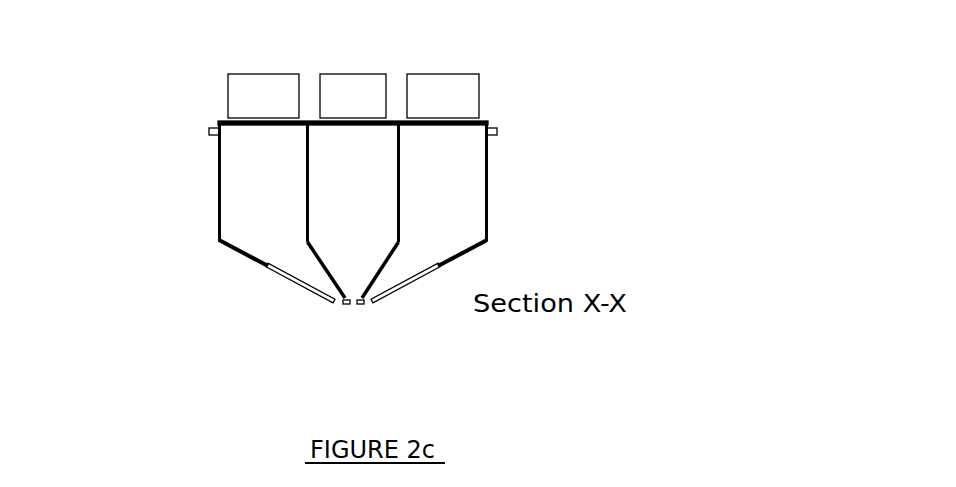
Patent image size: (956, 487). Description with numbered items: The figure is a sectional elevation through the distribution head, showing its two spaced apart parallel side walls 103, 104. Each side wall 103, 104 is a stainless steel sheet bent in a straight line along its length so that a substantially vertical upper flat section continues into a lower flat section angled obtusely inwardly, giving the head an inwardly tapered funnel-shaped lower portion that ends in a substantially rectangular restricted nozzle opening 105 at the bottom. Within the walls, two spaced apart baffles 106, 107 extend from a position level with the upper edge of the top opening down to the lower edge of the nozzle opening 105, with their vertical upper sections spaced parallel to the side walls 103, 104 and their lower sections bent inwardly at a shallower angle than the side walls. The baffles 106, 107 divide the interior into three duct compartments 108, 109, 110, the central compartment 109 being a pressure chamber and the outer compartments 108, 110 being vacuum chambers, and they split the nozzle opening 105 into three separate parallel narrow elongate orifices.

The side wall 103 is at (141, 183).
The side wall 104 is at (490, 160).
The nozzle opening 105 is at (302, 354).
The baffle 106 is at (310, 243).
The baffle 107 is at (387, 258).
The duct compartment 108 is at (236, 189).
The central compartment 109 is at (387, 121).
The duct compartment 110 is at (489, 189).